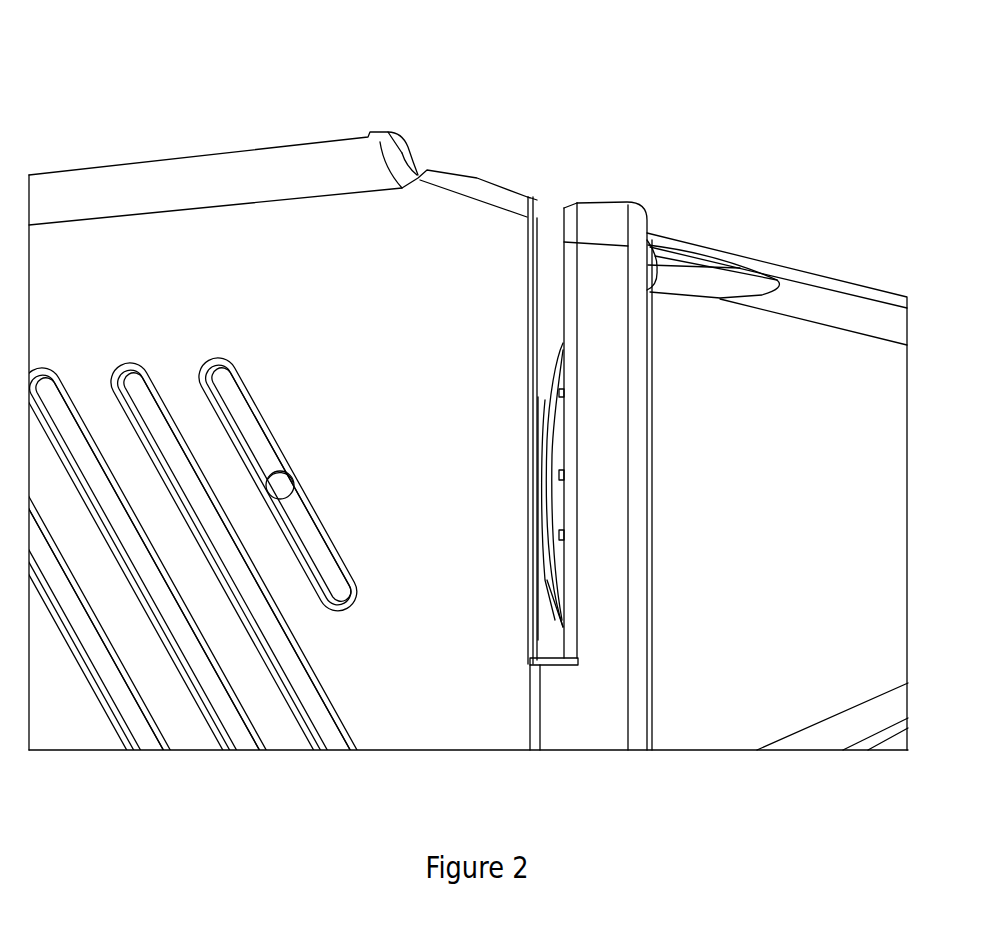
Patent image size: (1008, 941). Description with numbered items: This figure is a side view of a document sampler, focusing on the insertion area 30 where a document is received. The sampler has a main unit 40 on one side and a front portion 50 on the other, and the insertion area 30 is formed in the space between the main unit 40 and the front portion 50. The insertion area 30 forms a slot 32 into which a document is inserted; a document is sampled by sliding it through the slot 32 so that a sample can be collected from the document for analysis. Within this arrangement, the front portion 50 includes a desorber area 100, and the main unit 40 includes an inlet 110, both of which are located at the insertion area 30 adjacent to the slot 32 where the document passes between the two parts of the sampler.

The main unit 40 is at (128, 142).
The insertion area 30 is at (547, 181).
The slot 32 is at (548, 318).
The front portion 50 is at (803, 231).
The desorber area 100 is at (554, 457).
The inlet 110 is at (533, 462).